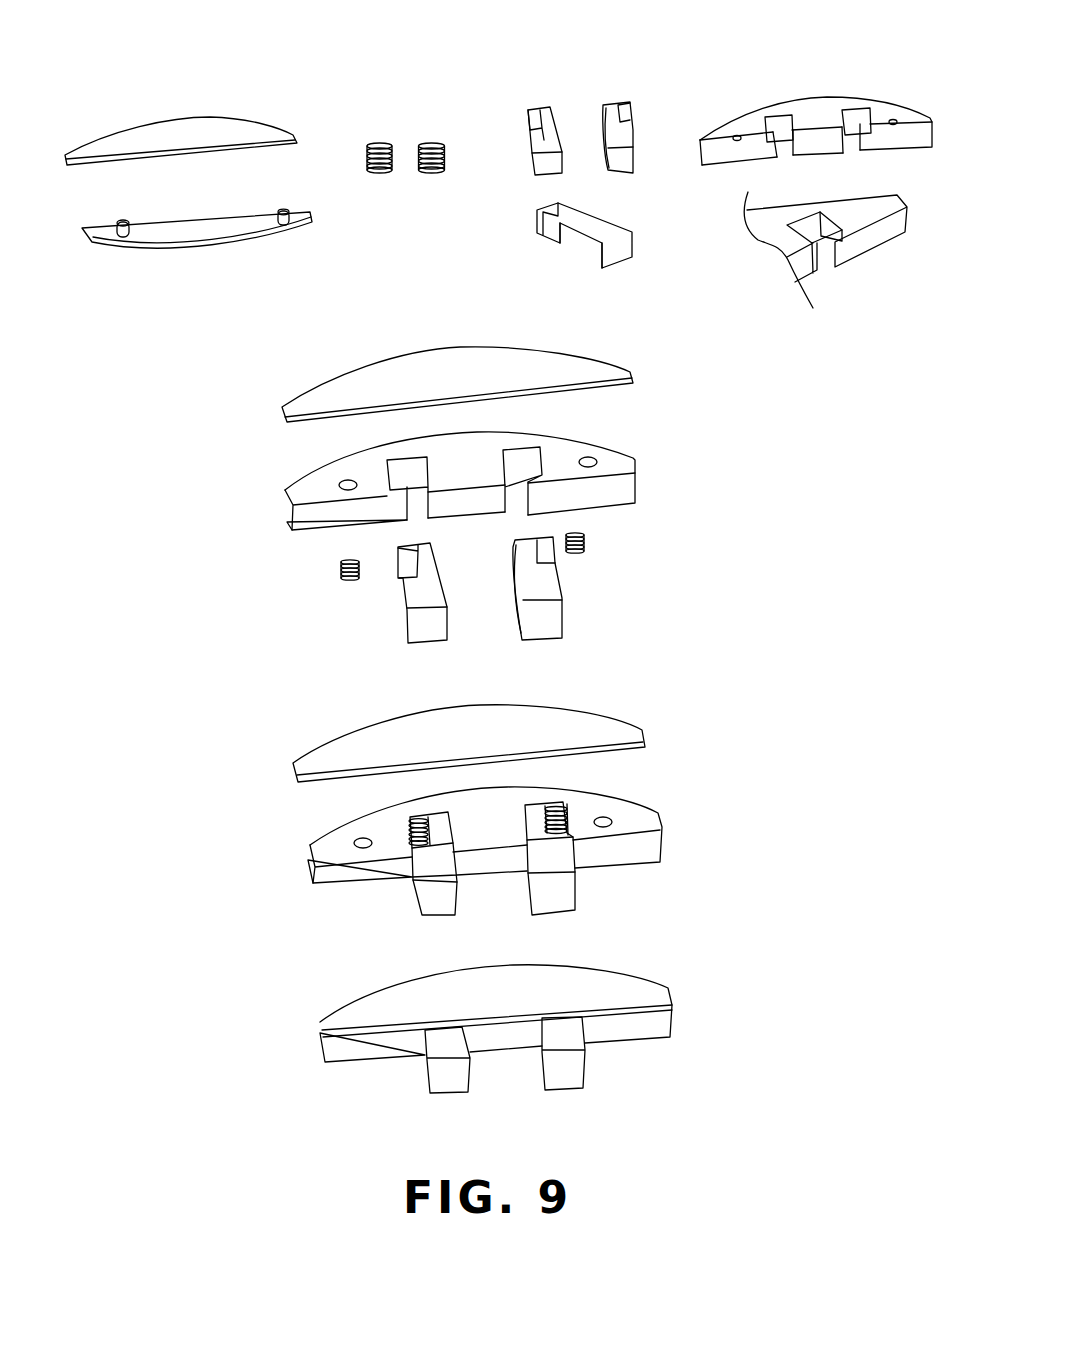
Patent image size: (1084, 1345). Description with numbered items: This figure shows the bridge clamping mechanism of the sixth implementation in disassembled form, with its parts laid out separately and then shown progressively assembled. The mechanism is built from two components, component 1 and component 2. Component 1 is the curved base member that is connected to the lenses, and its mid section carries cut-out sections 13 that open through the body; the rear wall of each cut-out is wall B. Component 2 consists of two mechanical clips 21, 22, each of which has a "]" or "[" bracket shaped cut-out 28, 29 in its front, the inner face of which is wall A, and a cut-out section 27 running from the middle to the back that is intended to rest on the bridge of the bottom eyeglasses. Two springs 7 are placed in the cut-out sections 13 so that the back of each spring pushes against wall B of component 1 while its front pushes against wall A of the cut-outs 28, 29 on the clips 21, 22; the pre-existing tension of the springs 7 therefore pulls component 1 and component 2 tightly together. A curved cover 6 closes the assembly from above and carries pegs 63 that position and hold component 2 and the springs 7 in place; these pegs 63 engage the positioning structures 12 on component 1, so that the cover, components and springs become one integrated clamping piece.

The component 1 is at (811, 177).
The component 2 is at (598, 173).
The cover 6 is at (205, 126).
The springs 7 is at (390, 127).
The positioning structures 12 is at (735, 136).
The cut-out 13 is at (777, 125).
The mechanical clip 21 is at (518, 108).
The mechanical clip 22 is at (644, 102).
The cut-out section 27 is at (580, 247).
The bracket shaped cut-out 28 is at (530, 118).
The bracket shaped cut-out 29 is at (623, 110).
The pegs 63 is at (125, 221).
The wall A is at (407, 560).
The wall B is at (393, 487).